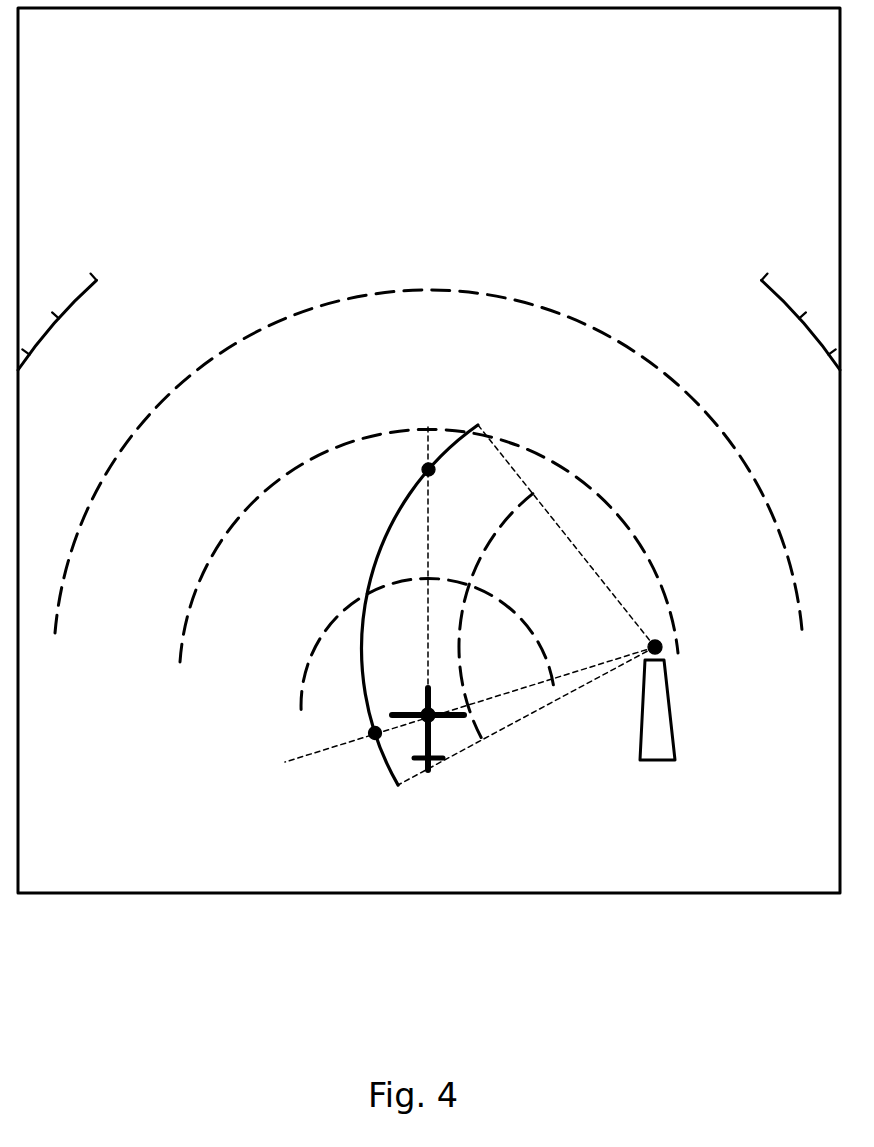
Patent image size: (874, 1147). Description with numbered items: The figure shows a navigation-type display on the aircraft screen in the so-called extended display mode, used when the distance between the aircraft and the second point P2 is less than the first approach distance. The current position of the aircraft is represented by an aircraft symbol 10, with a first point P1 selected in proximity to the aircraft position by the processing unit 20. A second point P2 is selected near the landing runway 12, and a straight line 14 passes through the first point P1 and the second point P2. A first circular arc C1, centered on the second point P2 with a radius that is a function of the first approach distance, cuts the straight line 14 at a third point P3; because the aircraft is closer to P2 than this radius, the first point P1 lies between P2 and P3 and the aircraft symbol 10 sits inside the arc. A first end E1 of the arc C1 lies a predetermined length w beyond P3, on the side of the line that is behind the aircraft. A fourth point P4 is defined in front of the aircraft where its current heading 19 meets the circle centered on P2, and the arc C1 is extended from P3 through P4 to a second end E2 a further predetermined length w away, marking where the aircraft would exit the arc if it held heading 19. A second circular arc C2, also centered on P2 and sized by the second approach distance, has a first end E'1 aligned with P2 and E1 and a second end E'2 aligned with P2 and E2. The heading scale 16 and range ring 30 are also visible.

The heading scale / compass rose 16 is at (690, 125).
The outer range ring 30 is at (428, 461).
The processing unit 20 is at (429, 545).
The current heading 19 is at (433, 507).
The straight line 14 is at (577, 676).
The aircraft symbol 10 is at (439, 770).
The landing runway 12 is at (670, 678).
The first circular arc C1 is at (390, 519).
The second circular arc C2 is at (490, 553).
The first point P1 is at (425, 706).
The second point P2 is at (665, 648).
The third point P3 is at (370, 732).
The fourth point P4 is at (420, 472).
The first end of the first circular arc E1 is at (399, 791).
The second end of the first circular arc E2 is at (481, 424).
The first end of the second circular arc E'1 is at (517, 788).
The second end of the second circular arc E'2 is at (576, 472).
The predetermined length w is at (430, 452).